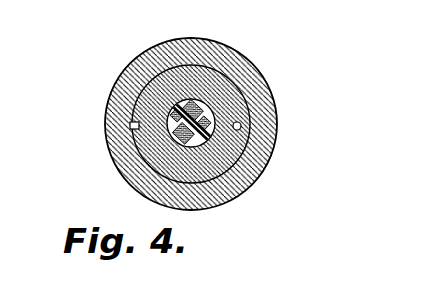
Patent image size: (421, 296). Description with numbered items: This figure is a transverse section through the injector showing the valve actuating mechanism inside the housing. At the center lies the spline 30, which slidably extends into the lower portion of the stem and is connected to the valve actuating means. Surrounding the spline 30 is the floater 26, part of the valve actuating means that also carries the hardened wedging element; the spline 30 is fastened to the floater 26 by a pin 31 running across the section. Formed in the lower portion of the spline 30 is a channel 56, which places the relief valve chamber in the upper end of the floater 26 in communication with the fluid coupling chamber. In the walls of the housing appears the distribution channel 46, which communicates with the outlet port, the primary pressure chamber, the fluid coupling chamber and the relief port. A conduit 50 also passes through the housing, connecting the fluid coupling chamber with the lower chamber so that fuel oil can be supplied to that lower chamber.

The floater 26 is at (173, 139).
The spline 30 is at (210, 110).
The pin 31 is at (185, 105).
The distribution channel 46 is at (131, 125).
The conduit 50 is at (241, 126).
The channel 56 is at (183, 146).